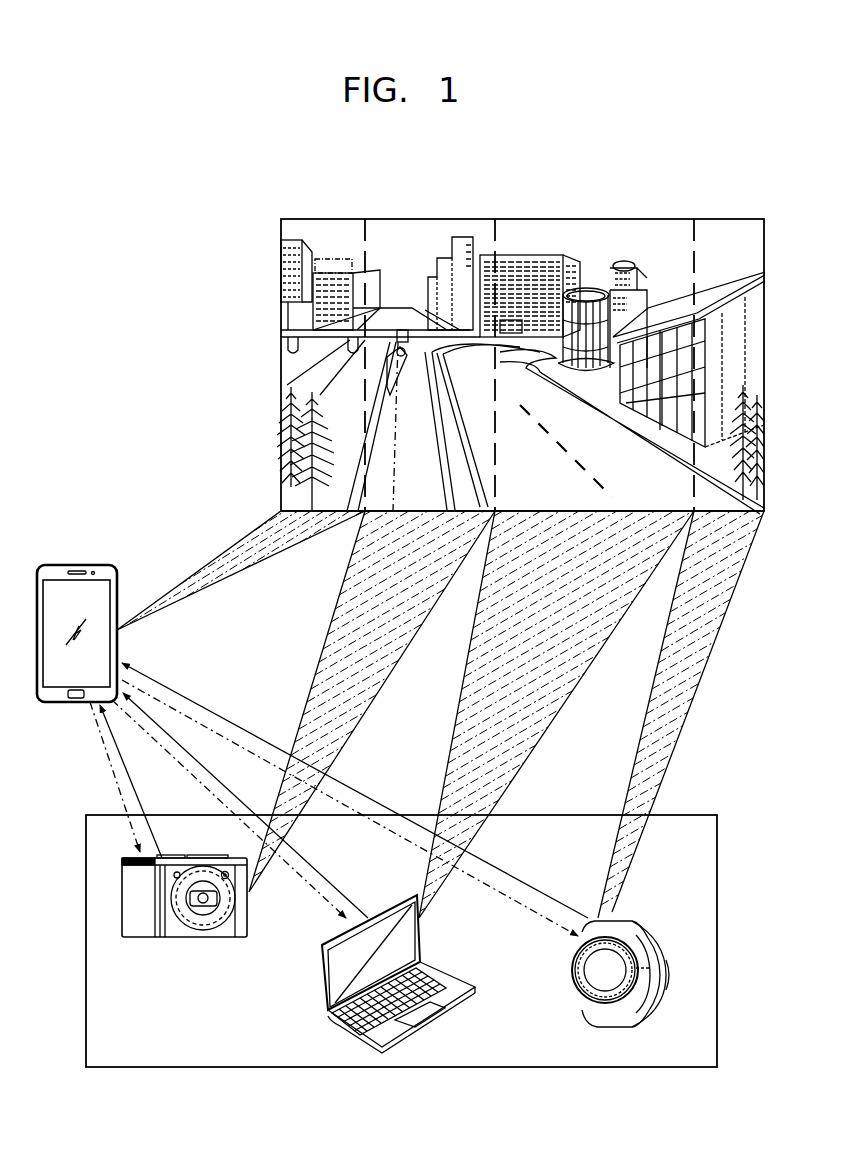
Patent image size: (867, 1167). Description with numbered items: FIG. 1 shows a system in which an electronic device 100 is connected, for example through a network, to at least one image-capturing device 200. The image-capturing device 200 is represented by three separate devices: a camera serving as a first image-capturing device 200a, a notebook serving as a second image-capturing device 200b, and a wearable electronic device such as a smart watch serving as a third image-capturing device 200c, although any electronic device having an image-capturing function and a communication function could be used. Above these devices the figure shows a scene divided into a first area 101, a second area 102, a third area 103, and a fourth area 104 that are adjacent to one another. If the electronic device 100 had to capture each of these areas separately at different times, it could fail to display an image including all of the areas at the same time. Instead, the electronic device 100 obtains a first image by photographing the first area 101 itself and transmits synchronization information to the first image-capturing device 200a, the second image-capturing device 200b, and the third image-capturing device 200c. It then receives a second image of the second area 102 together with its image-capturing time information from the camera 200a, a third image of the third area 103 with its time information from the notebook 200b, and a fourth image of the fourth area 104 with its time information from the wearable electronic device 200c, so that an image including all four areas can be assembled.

The electronic device 100 is at (77, 563).
The first area 101 is at (329, 236).
The second area 102 is at (421, 236).
The third area 103 is at (591, 236).
The fourth area 104 is at (729, 236).
The image-capturing device 200 is at (718, 940).
The camera 200a is at (170, 859).
The notebook 200b is at (320, 972).
The wearable electronic device 200c is at (620, 915).